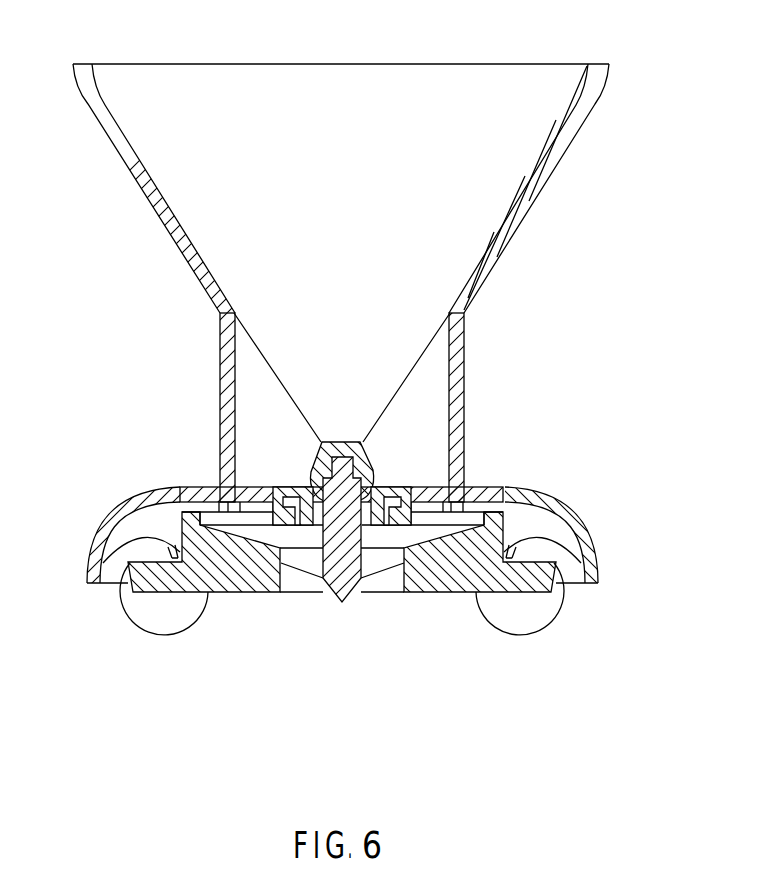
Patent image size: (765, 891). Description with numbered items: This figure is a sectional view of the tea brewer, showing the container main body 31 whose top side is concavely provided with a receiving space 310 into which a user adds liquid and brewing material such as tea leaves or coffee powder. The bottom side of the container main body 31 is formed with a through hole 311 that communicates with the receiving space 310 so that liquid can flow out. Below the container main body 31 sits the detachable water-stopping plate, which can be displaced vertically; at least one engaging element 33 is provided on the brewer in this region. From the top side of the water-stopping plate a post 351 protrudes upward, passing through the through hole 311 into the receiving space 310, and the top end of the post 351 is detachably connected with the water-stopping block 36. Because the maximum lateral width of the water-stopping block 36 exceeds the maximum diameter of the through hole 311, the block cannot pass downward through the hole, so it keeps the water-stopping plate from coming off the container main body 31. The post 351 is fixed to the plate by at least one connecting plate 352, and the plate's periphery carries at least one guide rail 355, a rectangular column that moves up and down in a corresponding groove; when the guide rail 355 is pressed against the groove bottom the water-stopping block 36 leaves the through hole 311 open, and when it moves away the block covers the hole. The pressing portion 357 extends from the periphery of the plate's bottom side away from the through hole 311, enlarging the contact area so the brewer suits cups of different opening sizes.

The receiving space 310 is at (382, 382).
The container main body 31 is at (537, 183).
The through hole 311 is at (371, 502).
The engaging element 33 is at (147, 525).
The water-stopping block 36 is at (323, 468).
The post 351 is at (343, 603).
The connecting plate 352 is at (392, 585).
The guide rail 355 is at (512, 522).
The pressing portion 357 is at (228, 583).